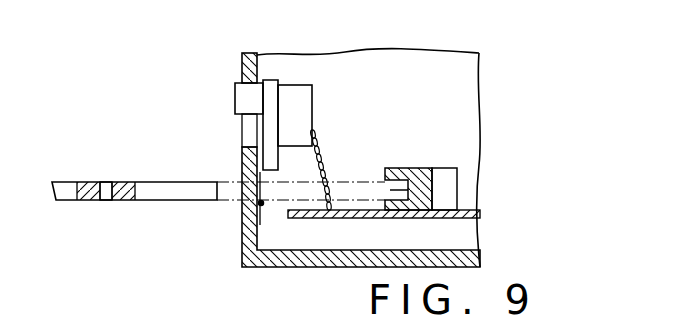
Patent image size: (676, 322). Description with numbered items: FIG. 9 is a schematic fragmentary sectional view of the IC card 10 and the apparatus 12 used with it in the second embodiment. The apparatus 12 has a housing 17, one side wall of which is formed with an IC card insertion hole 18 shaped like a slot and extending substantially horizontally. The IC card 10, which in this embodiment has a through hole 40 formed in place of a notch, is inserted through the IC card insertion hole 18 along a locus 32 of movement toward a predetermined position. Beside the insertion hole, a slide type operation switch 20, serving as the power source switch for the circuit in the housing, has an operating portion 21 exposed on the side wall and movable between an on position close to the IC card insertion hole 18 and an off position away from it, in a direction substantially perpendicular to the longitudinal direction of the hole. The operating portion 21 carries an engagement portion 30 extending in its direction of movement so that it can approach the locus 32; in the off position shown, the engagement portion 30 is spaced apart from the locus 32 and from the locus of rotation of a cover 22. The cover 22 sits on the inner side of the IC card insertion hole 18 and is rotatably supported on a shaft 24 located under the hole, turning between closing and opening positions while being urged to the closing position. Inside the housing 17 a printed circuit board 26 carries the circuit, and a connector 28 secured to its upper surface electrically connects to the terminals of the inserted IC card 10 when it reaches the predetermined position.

The apparatus 12 is at (302, 46).
The housing 17 is at (240, 76).
The operating portion 21 is at (241, 97).
The engagement portion 30 is at (278, 160).
The slide type operation switch 20 is at (315, 101).
The locus of movement 32 is at (364, 180).
The connector 28 is at (412, 168).
The printed circuit board 26 is at (470, 208).
The IC card 10 is at (172, 176).
The through hole 40 is at (106, 182).
The IC card insertion hole 18 is at (246, 193).
The shaft 24 is at (263, 206).
The cover 22 is at (266, 188).